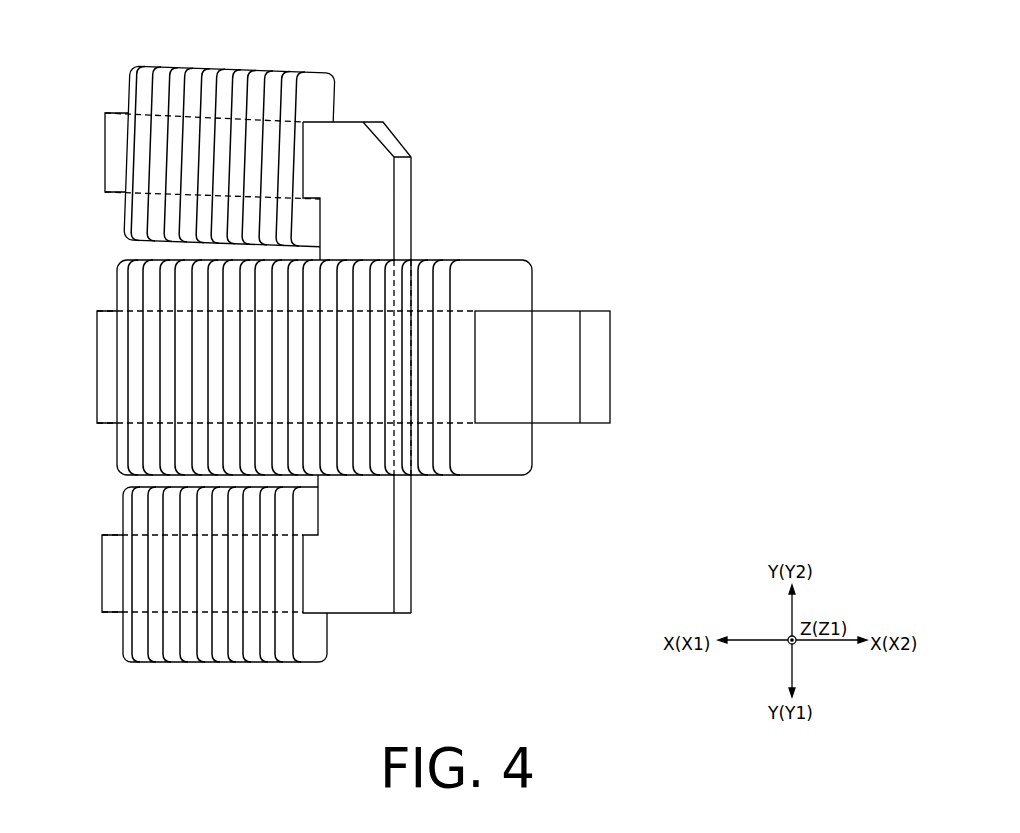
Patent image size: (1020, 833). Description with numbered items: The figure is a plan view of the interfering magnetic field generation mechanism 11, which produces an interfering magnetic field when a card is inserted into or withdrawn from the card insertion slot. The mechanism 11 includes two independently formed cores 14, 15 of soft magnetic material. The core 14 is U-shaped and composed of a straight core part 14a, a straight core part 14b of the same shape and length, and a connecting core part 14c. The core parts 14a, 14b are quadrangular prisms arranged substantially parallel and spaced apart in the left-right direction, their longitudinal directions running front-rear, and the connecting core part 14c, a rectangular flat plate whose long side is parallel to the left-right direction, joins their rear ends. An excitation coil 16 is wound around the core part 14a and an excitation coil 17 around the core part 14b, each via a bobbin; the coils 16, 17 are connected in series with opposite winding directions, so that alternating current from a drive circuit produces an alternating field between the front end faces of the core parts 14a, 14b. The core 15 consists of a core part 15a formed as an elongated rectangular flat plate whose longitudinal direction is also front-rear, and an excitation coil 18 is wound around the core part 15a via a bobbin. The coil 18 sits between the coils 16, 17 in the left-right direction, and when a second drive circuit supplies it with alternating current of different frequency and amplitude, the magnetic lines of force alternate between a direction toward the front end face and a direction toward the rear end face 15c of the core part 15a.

The interfering magnetic field generation mechanism 11 is at (634, 72).
The core 14 is at (275, 363).
The core part 14a is at (101, 575).
The core part 14b is at (103, 155).
The connecting core part 14c is at (412, 553).
The core 15 is at (579, 396).
The core part 15a is at (562, 425).
The rear end face 15c is at (600, 370).
The excitation coil 16 is at (220, 663).
The excitation coil 17 is at (230, 65).
The excitation coil 18 is at (487, 258).